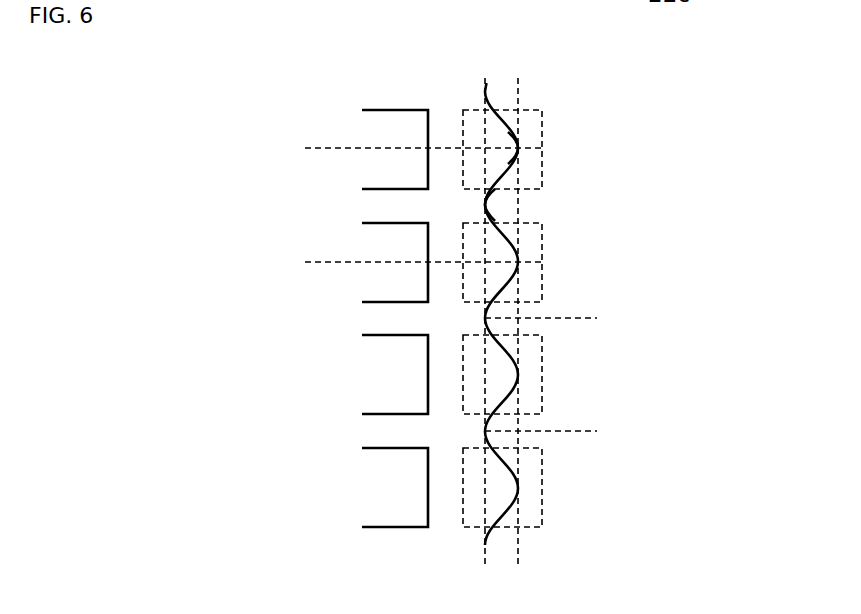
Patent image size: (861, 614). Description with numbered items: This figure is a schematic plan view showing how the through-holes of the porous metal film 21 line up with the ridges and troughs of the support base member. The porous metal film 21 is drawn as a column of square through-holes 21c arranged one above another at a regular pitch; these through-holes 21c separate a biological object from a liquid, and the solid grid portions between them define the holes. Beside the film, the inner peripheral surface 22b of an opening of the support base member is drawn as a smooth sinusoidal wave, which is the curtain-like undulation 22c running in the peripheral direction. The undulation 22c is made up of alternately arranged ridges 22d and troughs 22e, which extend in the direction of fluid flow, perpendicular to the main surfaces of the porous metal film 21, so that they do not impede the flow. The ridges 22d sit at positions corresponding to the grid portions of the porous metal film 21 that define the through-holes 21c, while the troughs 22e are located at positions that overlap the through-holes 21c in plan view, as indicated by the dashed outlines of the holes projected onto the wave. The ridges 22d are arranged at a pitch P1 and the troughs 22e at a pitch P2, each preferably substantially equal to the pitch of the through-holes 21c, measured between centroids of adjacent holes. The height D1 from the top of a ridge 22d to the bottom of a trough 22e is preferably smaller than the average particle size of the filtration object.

The porous metal film 21 is at (372, 321).
The through-holes 21c is at (482, 128).
The inner peripheral surface 22b is at (503, 462).
The undulation 22c is at (671, 138).
The ridges 22d is at (486, 205).
The troughs 22e is at (516, 149).
The pitch of the ridges P1 is at (317, 150).
The pitch of the troughs P2 is at (585, 318).
The height from ridge top to trough bottom D1 is at (485, 318).